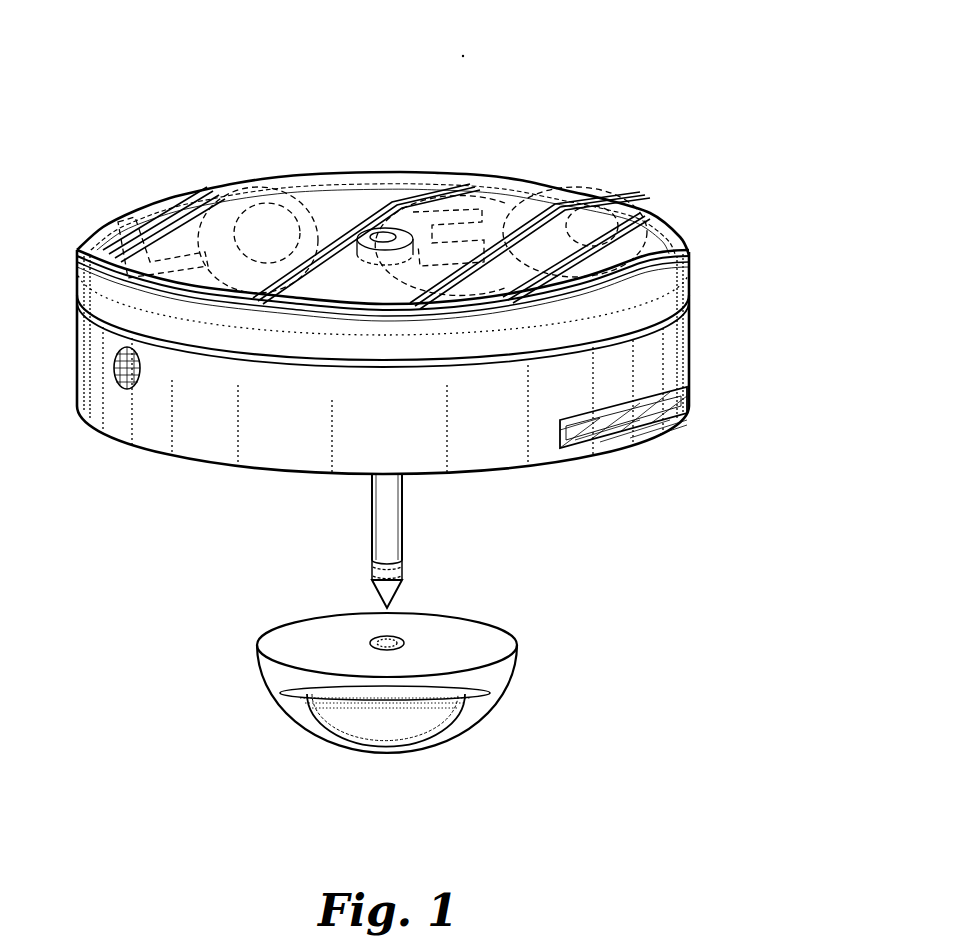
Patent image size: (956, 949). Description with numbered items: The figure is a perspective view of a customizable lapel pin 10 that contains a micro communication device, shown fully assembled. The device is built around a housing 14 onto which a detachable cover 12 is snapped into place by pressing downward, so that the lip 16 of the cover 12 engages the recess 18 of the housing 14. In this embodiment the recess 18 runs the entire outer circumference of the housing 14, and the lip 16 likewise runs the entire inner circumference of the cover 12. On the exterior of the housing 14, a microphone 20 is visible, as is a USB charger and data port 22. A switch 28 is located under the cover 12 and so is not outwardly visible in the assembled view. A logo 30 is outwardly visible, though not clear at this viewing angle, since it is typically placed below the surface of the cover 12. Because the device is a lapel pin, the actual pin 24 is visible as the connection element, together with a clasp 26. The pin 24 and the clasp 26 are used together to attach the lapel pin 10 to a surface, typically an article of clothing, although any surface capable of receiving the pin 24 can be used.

The customizable lapel pin 10 is at (401, 47).
The detachable cover 12 is at (238, 318).
The housing 14 is at (274, 457).
The lip 16 is at (668, 312).
The recess 18 is at (97, 290).
The microphone 20 is at (114, 376).
The USB charger and data port 22 is at (678, 414).
The pin 24 is at (404, 527).
The clasp 26 is at (516, 664).
The switch 28 is at (392, 232).
The logo 30 is at (238, 198).